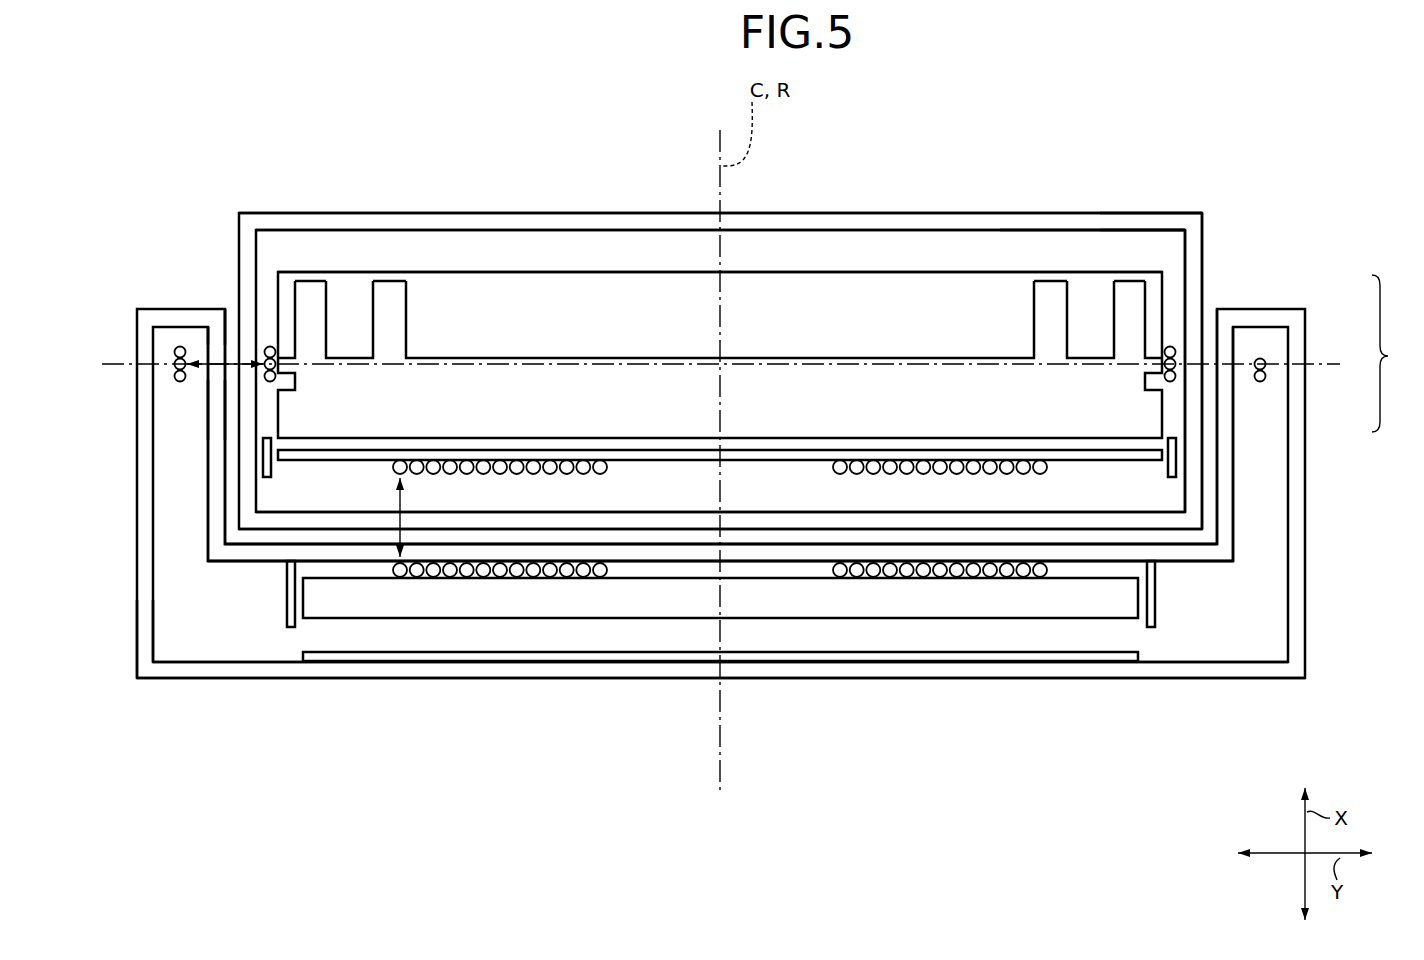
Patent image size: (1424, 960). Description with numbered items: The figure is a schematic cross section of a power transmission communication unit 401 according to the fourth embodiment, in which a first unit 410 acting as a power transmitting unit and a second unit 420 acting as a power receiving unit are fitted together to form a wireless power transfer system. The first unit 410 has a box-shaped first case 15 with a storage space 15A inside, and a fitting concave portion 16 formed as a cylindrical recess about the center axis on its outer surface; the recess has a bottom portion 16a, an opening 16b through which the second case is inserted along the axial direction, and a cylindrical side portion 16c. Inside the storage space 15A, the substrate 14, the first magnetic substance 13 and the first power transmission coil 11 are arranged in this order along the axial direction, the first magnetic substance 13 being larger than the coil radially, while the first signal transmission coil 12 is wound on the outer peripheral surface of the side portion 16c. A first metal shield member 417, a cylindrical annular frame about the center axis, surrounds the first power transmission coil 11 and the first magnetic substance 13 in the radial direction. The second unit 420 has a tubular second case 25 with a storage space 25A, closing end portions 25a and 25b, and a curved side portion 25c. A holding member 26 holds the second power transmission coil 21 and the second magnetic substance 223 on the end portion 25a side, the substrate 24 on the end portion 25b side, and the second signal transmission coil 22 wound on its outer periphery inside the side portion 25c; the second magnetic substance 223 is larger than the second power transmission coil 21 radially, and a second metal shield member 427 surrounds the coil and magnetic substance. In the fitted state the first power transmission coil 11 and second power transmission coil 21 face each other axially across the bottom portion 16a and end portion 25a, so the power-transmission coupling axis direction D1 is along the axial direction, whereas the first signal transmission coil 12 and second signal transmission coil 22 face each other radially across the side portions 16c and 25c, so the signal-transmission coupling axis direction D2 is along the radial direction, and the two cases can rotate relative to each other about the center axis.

The power transmission communication unit 401 is at (1398, 353).
The first unit 410 is at (1313, 459).
The second unit 420 is at (1216, 270).
The fitting concave portion 16 is at (227, 421).
The bottom portion 16a is at (258, 552).
The opening 16b is at (229, 308).
The side portion 16c is at (217, 408).
The first case 15 is at (822, 683).
The storage space 15A is at (190, 632).
The first metal shield member 417 is at (286, 603).
The first magnetic substance 13 is at (1008, 624).
The substrate 14 is at (932, 664).
The first power transmission coil 11 is at (1049, 570).
The power-transmission coupling axis direction D1 is at (398, 497).
The second case 25 is at (815, 212).
The storage space 25A is at (1077, 250).
The end portion 25b is at (1157, 224).
The side portion 25c is at (1193, 243).
The end portion 25a is at (1168, 522).
The second power transmission coil 21 is at (391, 467).
The substrate 24 is at (647, 270).
The holding member 26 is at (507, 356).
The second magnetic substance 223 is at (620, 448).
The second metal shield member 427 is at (265, 463).
The second signal transmission coil 22 is at (268, 345).
The first signal transmission coil 12 is at (172, 353).
The signal-transmission coupling axis direction D2 is at (196, 356).